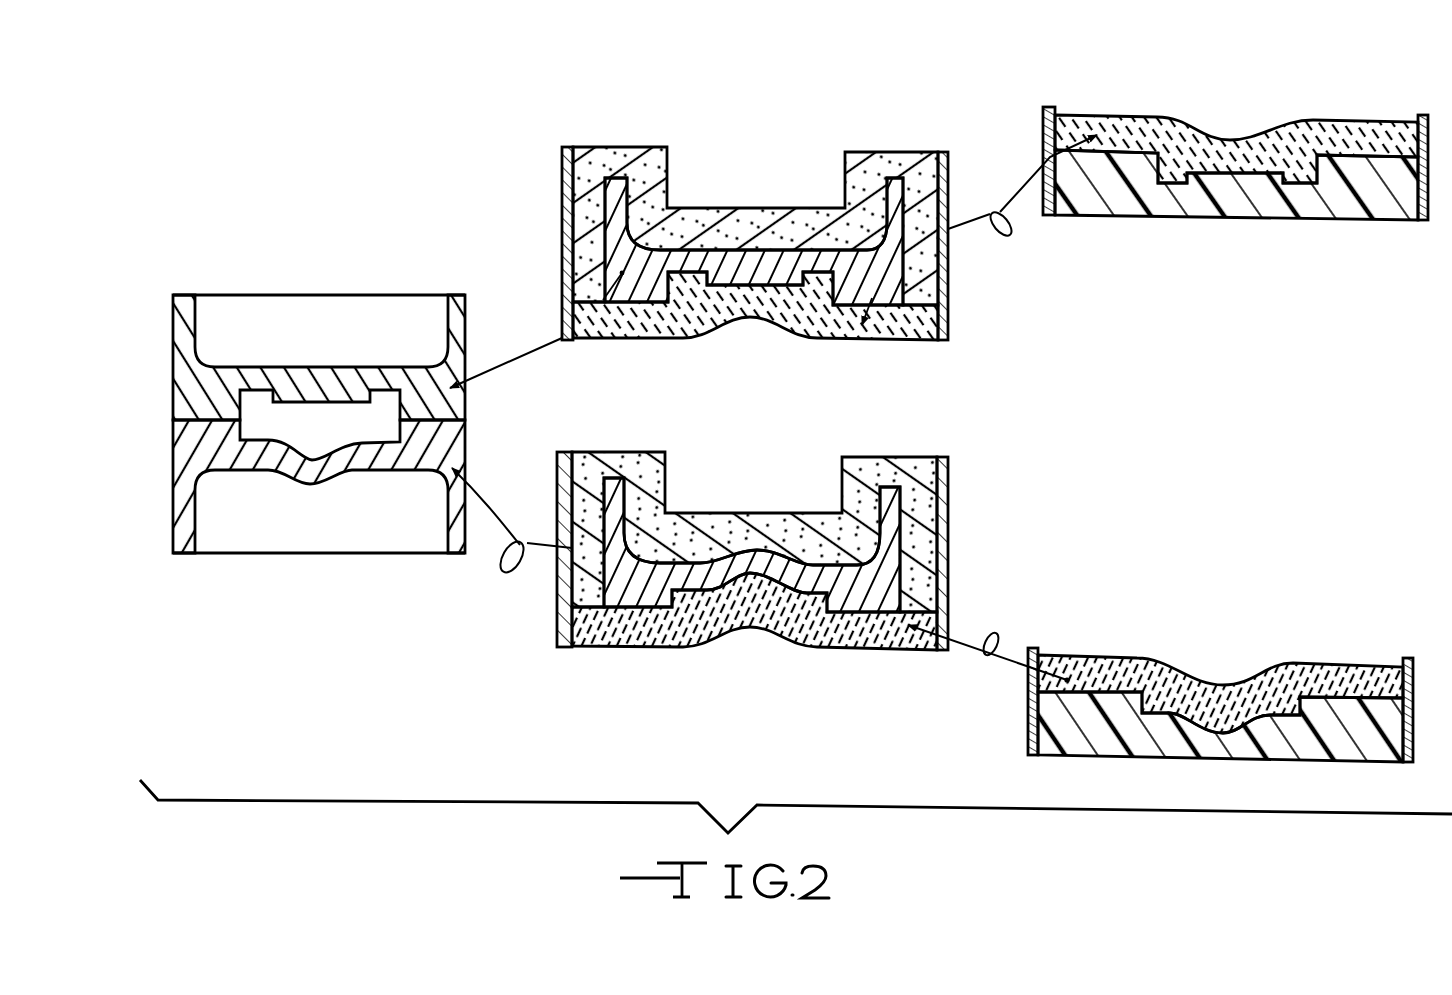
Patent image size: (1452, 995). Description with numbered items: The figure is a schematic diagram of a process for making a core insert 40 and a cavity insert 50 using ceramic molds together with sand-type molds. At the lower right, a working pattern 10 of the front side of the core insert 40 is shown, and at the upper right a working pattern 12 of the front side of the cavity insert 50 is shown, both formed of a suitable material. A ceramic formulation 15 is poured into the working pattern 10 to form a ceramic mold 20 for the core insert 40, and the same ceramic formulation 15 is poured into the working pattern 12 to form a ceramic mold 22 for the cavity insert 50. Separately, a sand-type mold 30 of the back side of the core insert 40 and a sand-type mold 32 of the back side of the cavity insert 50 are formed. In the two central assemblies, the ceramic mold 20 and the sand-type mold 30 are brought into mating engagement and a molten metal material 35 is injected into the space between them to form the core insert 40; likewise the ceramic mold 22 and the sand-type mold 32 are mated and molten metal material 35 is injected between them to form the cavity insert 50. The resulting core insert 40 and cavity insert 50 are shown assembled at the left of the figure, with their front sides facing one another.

The working pattern 10 is at (1083, 757).
The working pattern 12 is at (1167, 217).
The ceramic formulation 15 is at (1227, 147).
The ceramic mold 20 is at (867, 650).
The ceramic mold 22 is at (903, 343).
The sand-type mold 30 is at (858, 457).
The sand-type mold 32 is at (897, 150).
The molten metal material 35 is at (743, 263).
The core insert 40 is at (172, 540).
The cavity insert 50 is at (172, 305).